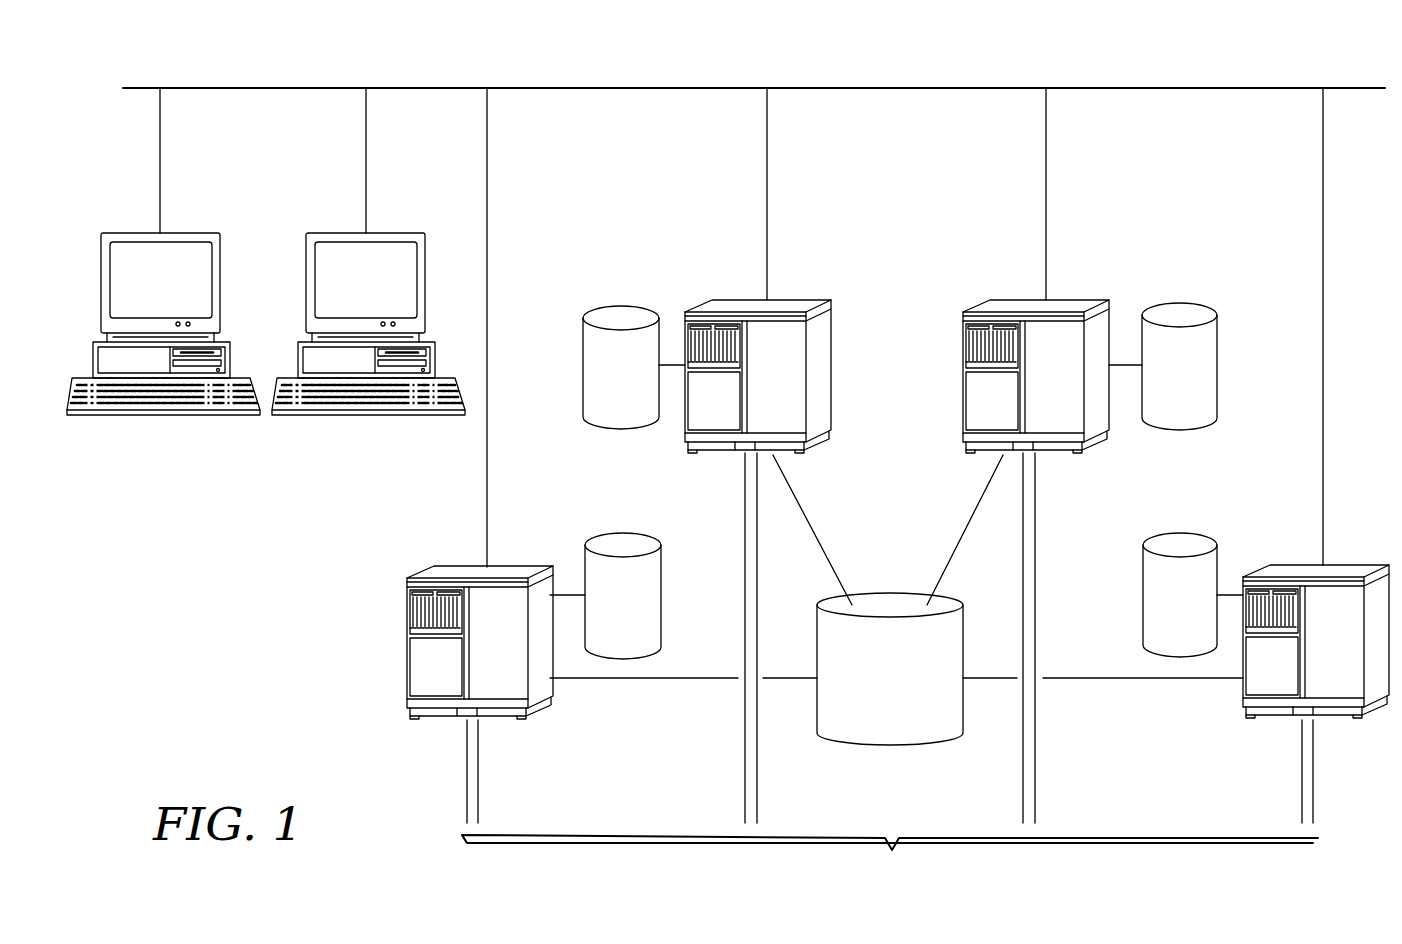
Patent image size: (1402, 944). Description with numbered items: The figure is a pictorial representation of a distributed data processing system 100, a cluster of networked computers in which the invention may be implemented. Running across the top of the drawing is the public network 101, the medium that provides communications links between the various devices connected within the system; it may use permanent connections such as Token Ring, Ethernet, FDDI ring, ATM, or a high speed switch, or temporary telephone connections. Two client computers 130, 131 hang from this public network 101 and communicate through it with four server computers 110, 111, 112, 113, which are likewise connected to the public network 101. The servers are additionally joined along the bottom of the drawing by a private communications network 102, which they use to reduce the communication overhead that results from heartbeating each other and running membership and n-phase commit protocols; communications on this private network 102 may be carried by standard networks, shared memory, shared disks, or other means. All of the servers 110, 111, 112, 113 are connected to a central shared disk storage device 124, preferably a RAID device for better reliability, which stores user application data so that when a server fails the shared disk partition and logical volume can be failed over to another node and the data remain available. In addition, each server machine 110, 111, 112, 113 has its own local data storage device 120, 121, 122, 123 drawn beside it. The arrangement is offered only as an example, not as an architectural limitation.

The distributed data processing system 100 is at (728, 470).
The public network 101 is at (425, 85).
The private communications network 102 is at (890, 683).
The server computer 110 is at (462, 570).
The server computer 111 is at (795, 305).
The server computer 112 is at (1018, 305).
The server computer 113 is at (1352, 570).
The local data storage device 120 is at (622, 545).
The local data storage device 121 is at (622, 316).
The local data storage device 122 is at (1178, 316).
The local data storage device 123 is at (1180, 545).
The shared disk storage device 124 is at (912, 693).
The client computer 130 is at (130, 232).
The client computer 131 is at (335, 232).